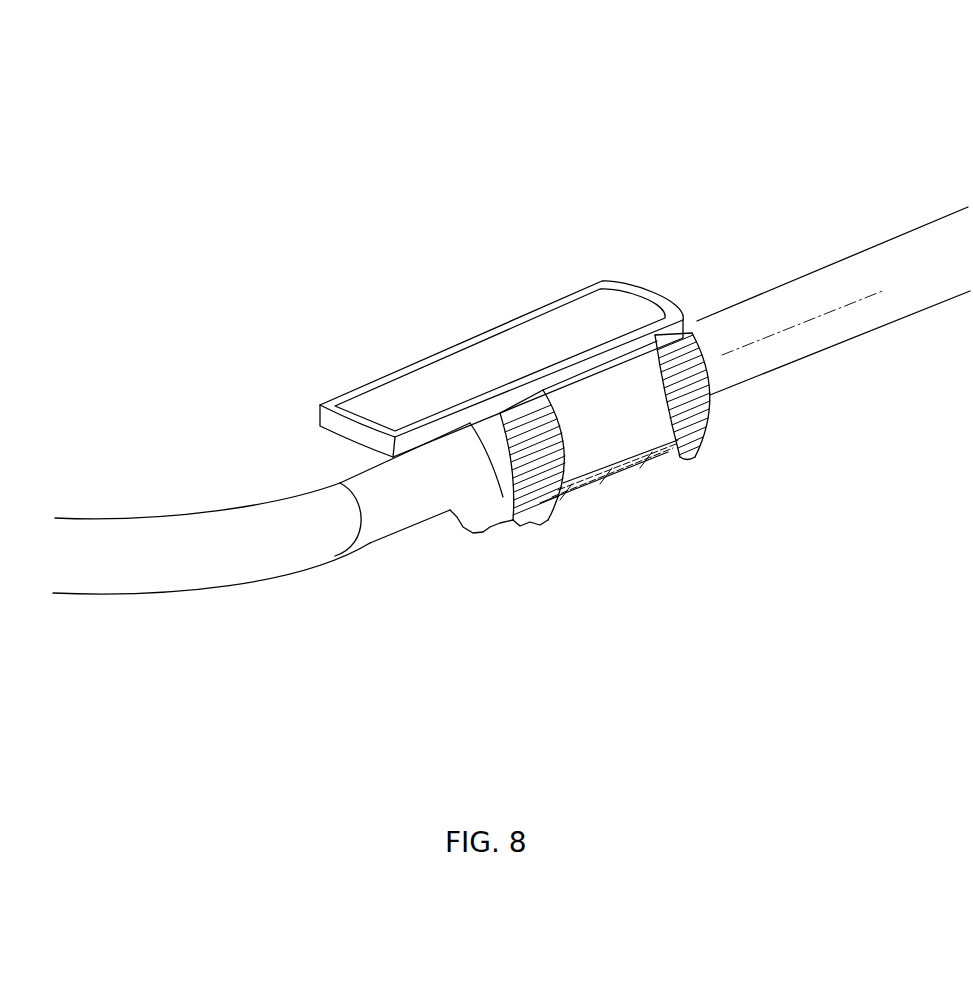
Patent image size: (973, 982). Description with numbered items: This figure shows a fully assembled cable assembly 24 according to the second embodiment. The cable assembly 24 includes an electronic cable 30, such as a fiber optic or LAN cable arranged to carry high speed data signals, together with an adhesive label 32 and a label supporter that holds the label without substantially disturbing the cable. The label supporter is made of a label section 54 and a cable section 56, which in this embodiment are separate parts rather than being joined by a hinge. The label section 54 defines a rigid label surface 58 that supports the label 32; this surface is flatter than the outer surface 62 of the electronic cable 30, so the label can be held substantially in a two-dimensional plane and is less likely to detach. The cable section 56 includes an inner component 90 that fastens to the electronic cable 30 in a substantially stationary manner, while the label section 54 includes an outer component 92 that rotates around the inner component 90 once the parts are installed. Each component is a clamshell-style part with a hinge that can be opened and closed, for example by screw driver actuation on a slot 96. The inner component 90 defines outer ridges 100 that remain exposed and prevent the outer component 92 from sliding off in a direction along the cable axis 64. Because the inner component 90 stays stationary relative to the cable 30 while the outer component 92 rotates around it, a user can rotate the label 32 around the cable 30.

The cable assembly 24 is at (138, 123).
The electronic cable 30 is at (949, 275).
The adhesive label 32 is at (456, 350).
The label section 54 is at (654, 260).
The cable section 56 is at (703, 315).
The rigid label surface 58 is at (578, 298).
The outer surface 62 is at (887, 306).
The cable axis 64 is at (817, 318).
The inner component 90 is at (483, 527).
The outer component 92 is at (645, 432).
The slot 96 is at (607, 468).
The outer ridges 100 is at (702, 402).